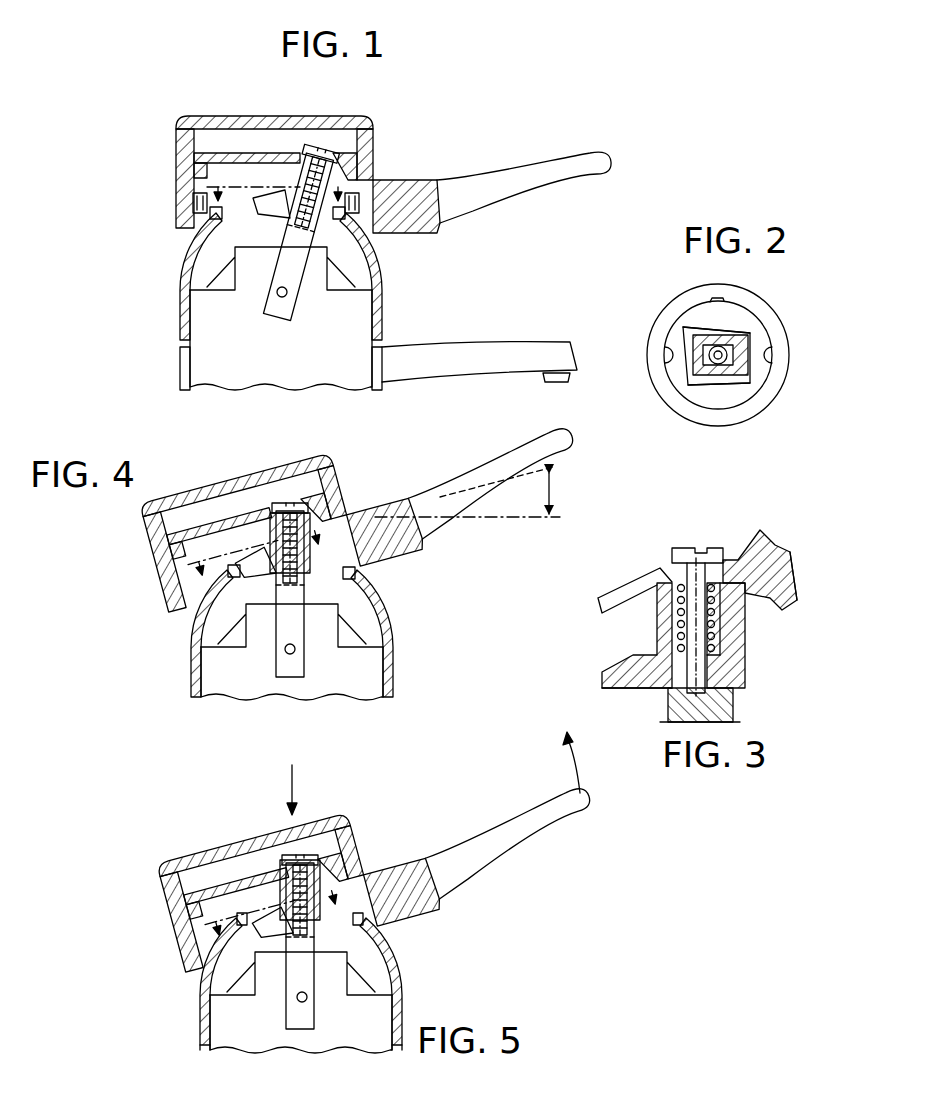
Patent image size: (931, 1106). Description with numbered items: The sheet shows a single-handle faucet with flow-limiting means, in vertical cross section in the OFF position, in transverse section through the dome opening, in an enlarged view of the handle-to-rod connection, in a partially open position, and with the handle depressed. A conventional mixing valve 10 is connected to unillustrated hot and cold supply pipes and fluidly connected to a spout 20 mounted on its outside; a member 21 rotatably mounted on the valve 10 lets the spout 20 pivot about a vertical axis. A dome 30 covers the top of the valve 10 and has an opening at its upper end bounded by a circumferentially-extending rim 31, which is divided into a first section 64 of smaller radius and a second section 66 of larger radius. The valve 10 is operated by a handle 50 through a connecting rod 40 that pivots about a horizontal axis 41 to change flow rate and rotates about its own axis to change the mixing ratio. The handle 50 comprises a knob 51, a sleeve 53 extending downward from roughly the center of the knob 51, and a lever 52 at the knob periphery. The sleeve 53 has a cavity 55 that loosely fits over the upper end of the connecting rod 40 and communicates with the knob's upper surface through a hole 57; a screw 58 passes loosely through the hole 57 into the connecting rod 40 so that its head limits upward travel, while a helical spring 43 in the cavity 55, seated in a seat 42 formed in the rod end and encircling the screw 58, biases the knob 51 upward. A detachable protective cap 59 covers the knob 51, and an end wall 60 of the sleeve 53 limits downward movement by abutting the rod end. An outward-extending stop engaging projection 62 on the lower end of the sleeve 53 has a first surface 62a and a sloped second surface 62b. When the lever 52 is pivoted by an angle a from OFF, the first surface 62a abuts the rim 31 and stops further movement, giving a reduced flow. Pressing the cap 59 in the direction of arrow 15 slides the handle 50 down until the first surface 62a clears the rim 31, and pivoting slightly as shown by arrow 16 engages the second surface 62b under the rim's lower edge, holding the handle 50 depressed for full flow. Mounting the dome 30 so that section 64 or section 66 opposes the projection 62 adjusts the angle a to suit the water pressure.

In FIG. 1, the mixing valve 10 is at (207, 320).
In FIG. 4, the mixing valve 10 is at (230, 690).
In FIG. 5, the mixing valve 10 is at (233, 1040).
In FIG. 5, the arrow 15 is at (290, 770).
In FIG. 5, the arrow 16 is at (580, 755).
In FIG. 1, the spout 20 is at (500, 340).
In FIG. 1, the member 21 is at (180, 380).
In FIG. 1, the dome 30 is at (186, 263).
In FIG. 2, the dome 30 is at (763, 413).
In FIG. 4, the dome 30 is at (193, 674).
In FIG. 5, the dome 30 is at (200, 1037).
In FIG. 1, the rim 31 is at (209, 208).
In FIG. 2, the rim 31 is at (773, 387).
In FIG. 4, the rim 31 is at (233, 566).
In FIG. 5, the rim 31 is at (237, 922).
In FIG. 1, the connecting rod 40 is at (310, 240).
In FIG. 2, the connecting rod 40 is at (733, 337).
In FIG. 4, the connecting rod 40 is at (299, 595).
In FIG. 3, the connecting rod 40 is at (717, 710).
In FIG. 5, the connecting rod 40 is at (310, 952).
In FIG. 1, the horizontal axis 41 is at (287, 294).
In FIG. 4, the horizontal axis 41 is at (285, 650).
In FIG. 5, the horizontal axis 41 is at (307, 1000).
In FIG. 3, the seat 42 is at (720, 643).
In FIG. 4, the helical spring 43 is at (273, 527).
In FIG. 3, the helical spring 43 is at (678, 592).
In FIG. 5, the helical spring 43 is at (287, 887).
In FIG. 1, the handle 50 is at (262, 137).
In FIG. 5, the handle 50 is at (243, 894).
In FIG. 1, the knob 51 is at (176, 196).
In FIG. 1, the lever 52 is at (566, 172).
In FIG. 4, the lever 52 is at (533, 452).
In FIG. 5, the lever 52 is at (565, 810).
In FIG. 1, the sleeve 53 is at (304, 150).
In FIG. 2, the sleeve 53 is at (750, 345).
In FIG. 4, the sleeve 53 is at (305, 570).
In FIG. 3, the sleeve 53 is at (760, 642).
In FIG. 5, the sleeve 53 is at (392, 946).
In FIG. 3, the cavity 55 is at (727, 600).
In FIG. 3, the hole 57 is at (770, 557).
In FIG. 1, the screw 58 is at (340, 130).
In FIG. 3, the screw 58 is at (687, 550).
In FIG. 5, the screw 58 is at (343, 857).
In FIG. 1, the protective cap 59 is at (205, 118).
In FIG. 3, the end wall 60 is at (750, 600).
In FIG. 1, the stop engaging projection 62 is at (280, 196).
In FIG. 2, the stop engaging projection 62 is at (679, 366).
In FIG. 3, the stop engaging projection 62 is at (599, 635).
In FIG. 5, the stop engaging projection 62 is at (188, 975).
In FIG. 2, the first surface 62a is at (680, 333).
In FIG. 3, the first surface 62a is at (627, 673).
In FIG. 2, the second surface 62b is at (690, 372).
In FIG. 3, the second surface 62b is at (637, 647).
In FIG. 5, the second surface 62b is at (198, 908).
In FIG. 2, the first section 64 is at (668, 355).
In FIG. 2, the second section 66 is at (778, 362).
In FIG. 4, the angle a is at (476, 492).